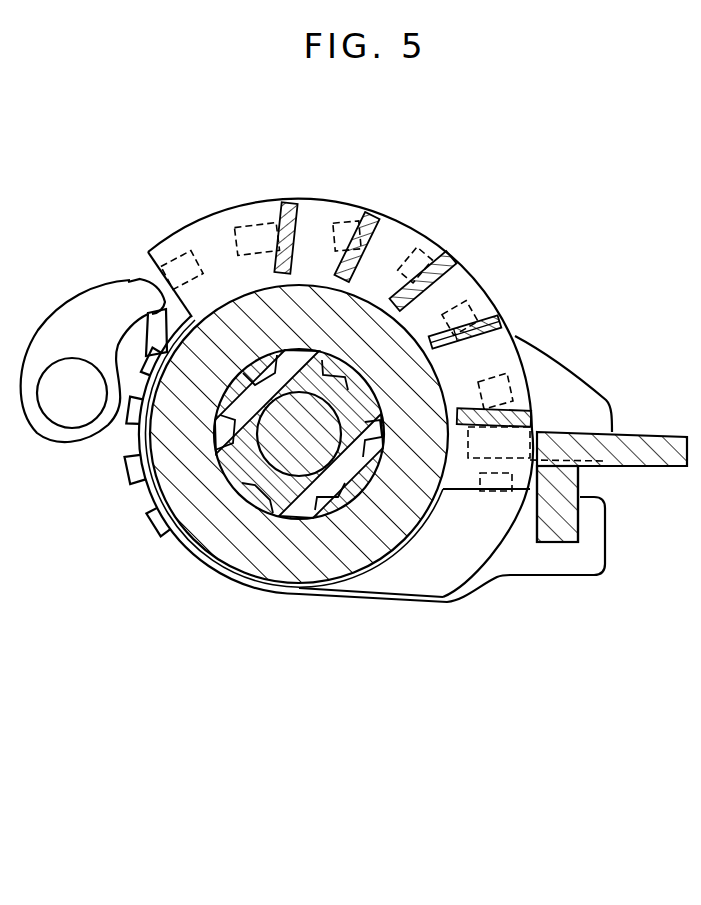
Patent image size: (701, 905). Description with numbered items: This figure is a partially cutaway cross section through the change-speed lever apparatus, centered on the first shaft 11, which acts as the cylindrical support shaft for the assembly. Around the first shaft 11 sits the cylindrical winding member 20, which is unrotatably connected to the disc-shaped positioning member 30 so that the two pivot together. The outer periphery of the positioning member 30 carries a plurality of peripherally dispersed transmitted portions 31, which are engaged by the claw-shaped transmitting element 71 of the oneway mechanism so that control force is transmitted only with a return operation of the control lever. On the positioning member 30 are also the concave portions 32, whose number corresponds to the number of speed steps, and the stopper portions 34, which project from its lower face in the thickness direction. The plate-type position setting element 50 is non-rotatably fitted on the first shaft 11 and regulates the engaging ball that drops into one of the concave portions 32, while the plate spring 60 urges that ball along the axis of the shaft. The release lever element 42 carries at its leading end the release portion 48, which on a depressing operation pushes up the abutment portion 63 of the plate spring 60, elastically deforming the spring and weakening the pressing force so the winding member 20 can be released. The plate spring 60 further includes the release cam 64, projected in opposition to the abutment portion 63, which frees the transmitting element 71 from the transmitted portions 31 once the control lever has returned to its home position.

The first shaft 11 is at (298, 516).
The winding member 20 is at (373, 558).
The positioning member 30 is at (202, 217).
The transmitted portions 31 is at (132, 430).
The concave portions 32 is at (317, 237).
The stopper portions 34 is at (437, 260).
The release lever element 42 is at (637, 443).
The release portion 48 is at (567, 523).
The position setting element 50 is at (487, 547).
The plate spring 60 is at (453, 605).
The abutment portion 63 is at (590, 573).
The release cam 64 is at (128, 282).
The transmitting element 71 is at (85, 298).